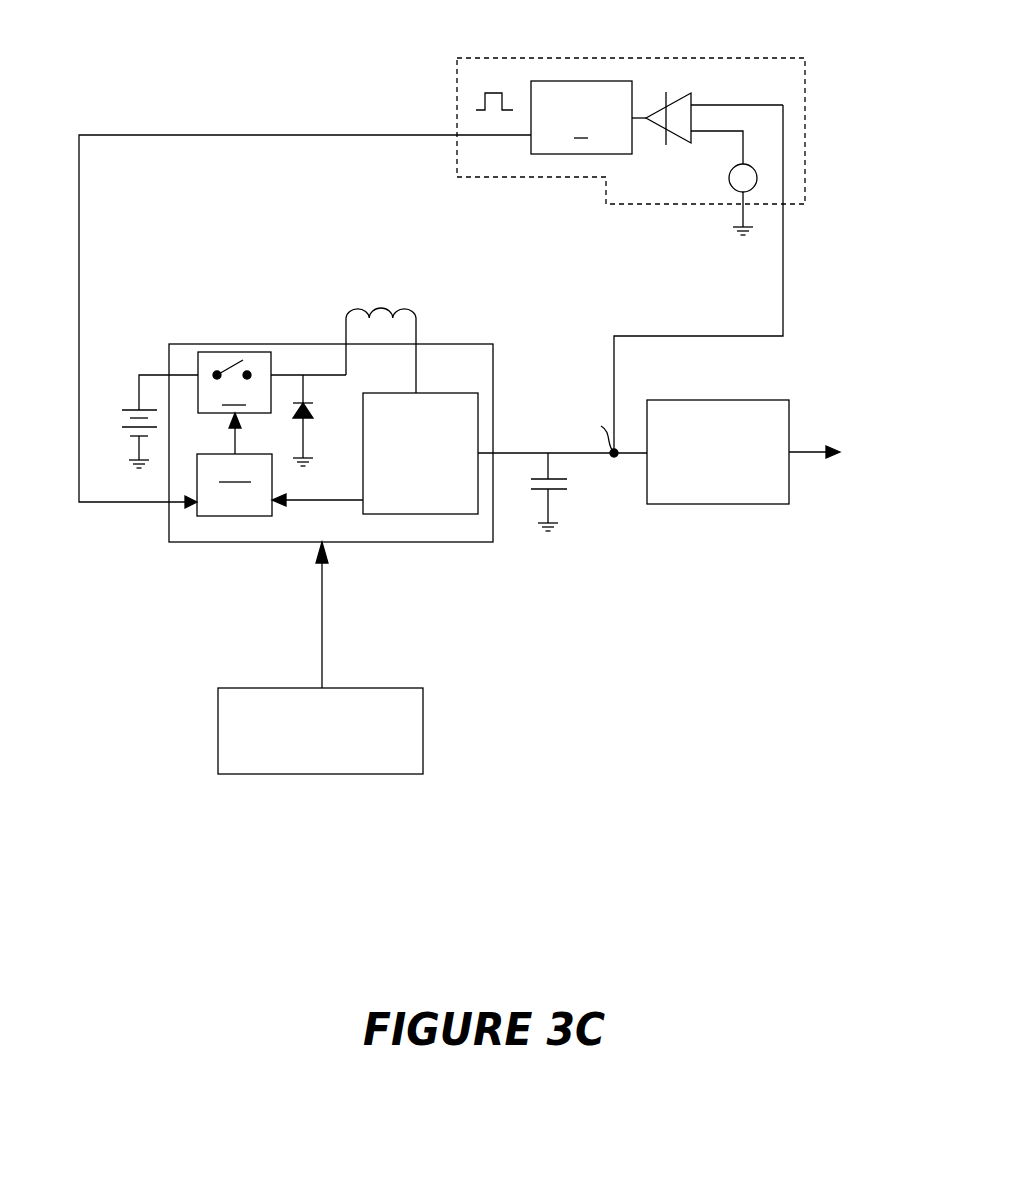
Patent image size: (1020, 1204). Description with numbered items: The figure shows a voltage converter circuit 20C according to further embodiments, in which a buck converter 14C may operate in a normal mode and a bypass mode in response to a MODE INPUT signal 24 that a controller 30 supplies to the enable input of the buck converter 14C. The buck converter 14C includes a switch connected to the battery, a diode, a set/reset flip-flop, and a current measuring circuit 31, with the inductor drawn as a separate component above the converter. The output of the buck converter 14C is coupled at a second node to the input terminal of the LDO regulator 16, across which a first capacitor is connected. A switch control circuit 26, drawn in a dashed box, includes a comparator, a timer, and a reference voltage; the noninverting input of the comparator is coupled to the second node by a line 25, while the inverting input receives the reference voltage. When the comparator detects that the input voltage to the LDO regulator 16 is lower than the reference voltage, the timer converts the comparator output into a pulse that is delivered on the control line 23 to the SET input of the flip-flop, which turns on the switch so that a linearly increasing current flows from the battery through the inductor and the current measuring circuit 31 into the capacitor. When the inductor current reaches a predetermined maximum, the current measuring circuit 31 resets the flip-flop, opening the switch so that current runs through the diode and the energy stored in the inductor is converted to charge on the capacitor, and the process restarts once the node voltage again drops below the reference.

The voltage converter circuit 20C is at (313, 69).
The control line 23 is at (437, 135).
The MODE INPUT signal 24 is at (323, 598).
The line 25 is at (783, 236).
The switch control circuit 26 is at (805, 119).
The buck converter 14C is at (474, 379).
The current measuring circuit 31 is at (409, 494).
The LDO regulator 16 is at (707, 476).
The controller 30 is at (309, 755).